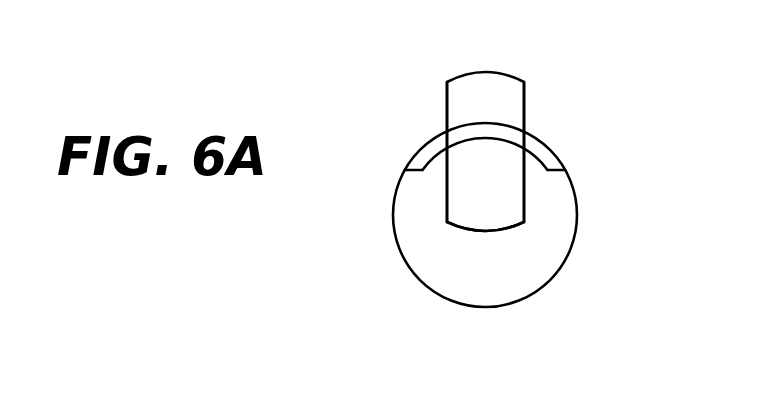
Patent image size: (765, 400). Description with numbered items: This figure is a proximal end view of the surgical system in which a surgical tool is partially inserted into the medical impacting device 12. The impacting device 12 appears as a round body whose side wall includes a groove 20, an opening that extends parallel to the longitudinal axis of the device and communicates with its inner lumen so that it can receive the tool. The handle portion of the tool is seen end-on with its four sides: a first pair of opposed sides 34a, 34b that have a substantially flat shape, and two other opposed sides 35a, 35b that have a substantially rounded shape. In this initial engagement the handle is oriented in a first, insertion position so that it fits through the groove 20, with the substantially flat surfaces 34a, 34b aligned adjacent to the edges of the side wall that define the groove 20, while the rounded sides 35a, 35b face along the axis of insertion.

The medical impacting device 12 is at (397, 237).
The groove 20 is at (547, 156).
The first flat side 34a is at (447, 114).
The second flat side 34b is at (524, 108).
The first rounded side 35a is at (478, 72).
The second rounded side 35b is at (492, 232).